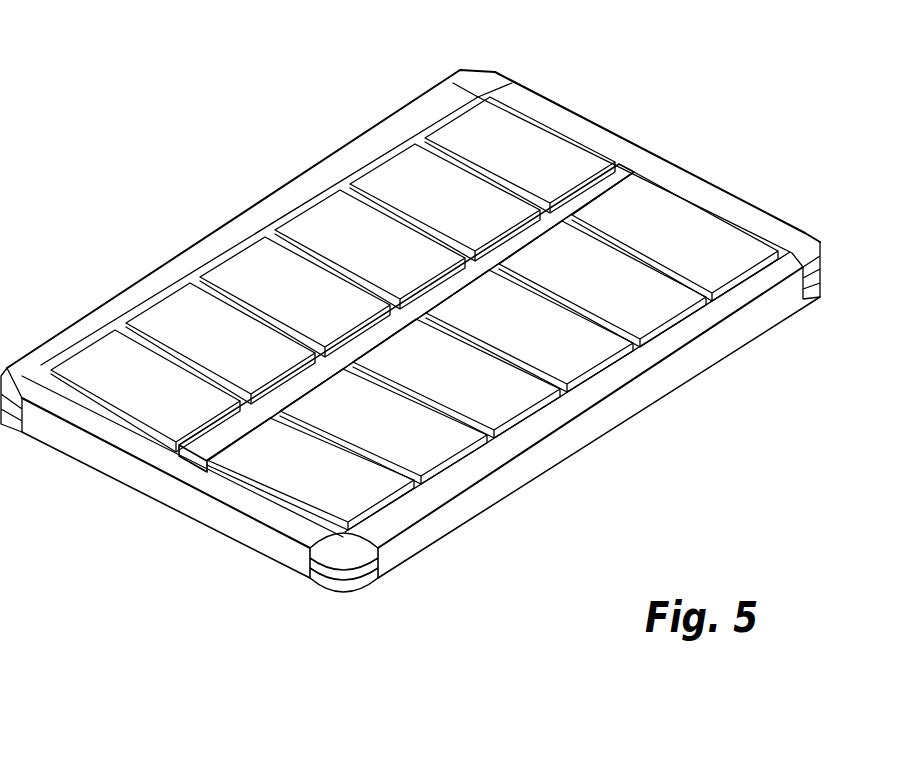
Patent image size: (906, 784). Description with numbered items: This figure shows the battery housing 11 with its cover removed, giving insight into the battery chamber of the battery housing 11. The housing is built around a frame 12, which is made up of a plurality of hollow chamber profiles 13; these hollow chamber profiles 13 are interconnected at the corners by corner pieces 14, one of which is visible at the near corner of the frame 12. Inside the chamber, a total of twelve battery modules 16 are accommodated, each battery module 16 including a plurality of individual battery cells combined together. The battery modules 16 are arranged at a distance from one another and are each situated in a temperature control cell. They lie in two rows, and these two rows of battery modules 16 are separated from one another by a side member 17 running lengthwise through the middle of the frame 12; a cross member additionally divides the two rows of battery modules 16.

The battery housing 11 is at (215, 198).
The frame 12 is at (345, 140).
The hollow chamber profiles 13 is at (105, 308).
The corner pieces 14 is at (328, 590).
The battery modules 16 is at (514, 164).
The side member 17 is at (583, 200).